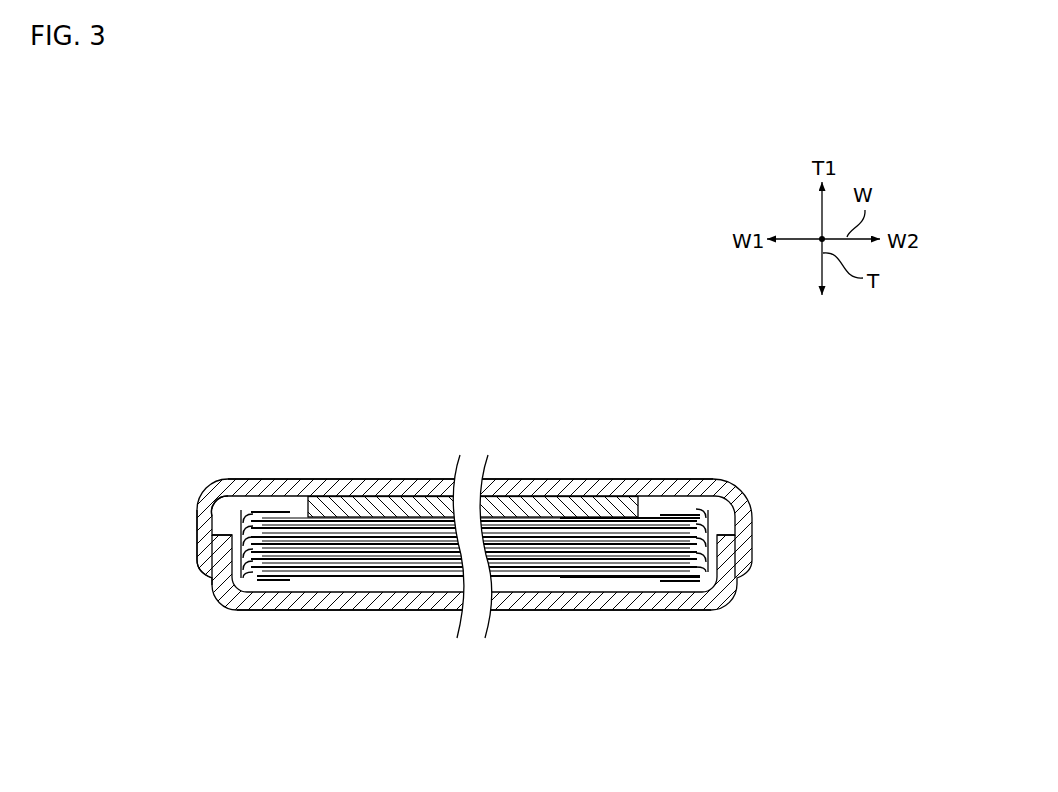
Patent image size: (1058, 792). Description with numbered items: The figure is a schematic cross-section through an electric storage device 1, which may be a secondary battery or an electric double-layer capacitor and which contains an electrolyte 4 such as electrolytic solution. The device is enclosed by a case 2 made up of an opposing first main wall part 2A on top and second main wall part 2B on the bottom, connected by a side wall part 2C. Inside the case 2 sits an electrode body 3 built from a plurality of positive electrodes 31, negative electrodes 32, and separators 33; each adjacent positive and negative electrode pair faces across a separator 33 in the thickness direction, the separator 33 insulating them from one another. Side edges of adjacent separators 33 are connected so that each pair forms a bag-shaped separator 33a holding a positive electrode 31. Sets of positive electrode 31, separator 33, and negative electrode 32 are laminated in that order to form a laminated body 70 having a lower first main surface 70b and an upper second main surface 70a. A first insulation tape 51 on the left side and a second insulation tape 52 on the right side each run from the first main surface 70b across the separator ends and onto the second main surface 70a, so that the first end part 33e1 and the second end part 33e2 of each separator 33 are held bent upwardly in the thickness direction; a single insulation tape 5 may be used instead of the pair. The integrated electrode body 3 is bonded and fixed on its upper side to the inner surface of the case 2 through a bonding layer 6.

The electric storage device 1 is at (715, 398).
The case 2 is at (757, 518).
The first main wall part 2A is at (550, 478).
The second main wall part 2B is at (407, 610).
The side wall part 2C is at (197, 537).
The electrode body 3 is at (530, 578).
The positive electrode 31 is at (302, 523).
The negative electrode 32 is at (303, 578).
The separator 33 is at (265, 575).
The bag-shaped separator 33a is at (577, 575).
The first end part of separator 33e1 is at (240, 580).
The second end part of separator 33e2 is at (707, 577).
The electrolyte 4 is at (228, 512).
The insulation tape 5 is at (272, 512).
The first insulation tape 51 is at (213, 563).
The second insulation tape 52 is at (718, 538).
The bonding layer 6 is at (390, 498).
The laminated body 70 is at (645, 513).
The second main surface 70a is at (593, 520).
The first main surface 70b is at (618, 578).